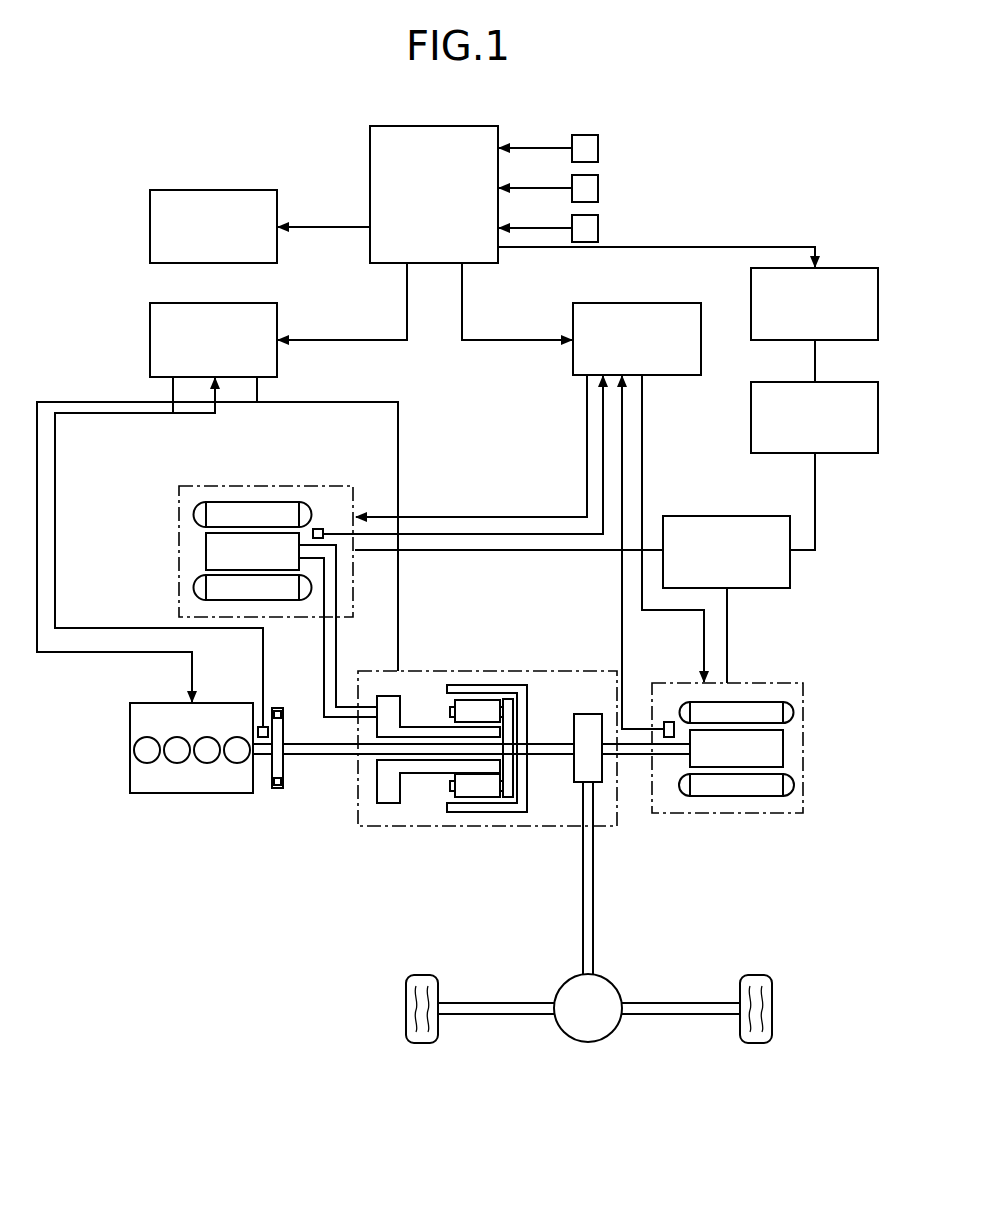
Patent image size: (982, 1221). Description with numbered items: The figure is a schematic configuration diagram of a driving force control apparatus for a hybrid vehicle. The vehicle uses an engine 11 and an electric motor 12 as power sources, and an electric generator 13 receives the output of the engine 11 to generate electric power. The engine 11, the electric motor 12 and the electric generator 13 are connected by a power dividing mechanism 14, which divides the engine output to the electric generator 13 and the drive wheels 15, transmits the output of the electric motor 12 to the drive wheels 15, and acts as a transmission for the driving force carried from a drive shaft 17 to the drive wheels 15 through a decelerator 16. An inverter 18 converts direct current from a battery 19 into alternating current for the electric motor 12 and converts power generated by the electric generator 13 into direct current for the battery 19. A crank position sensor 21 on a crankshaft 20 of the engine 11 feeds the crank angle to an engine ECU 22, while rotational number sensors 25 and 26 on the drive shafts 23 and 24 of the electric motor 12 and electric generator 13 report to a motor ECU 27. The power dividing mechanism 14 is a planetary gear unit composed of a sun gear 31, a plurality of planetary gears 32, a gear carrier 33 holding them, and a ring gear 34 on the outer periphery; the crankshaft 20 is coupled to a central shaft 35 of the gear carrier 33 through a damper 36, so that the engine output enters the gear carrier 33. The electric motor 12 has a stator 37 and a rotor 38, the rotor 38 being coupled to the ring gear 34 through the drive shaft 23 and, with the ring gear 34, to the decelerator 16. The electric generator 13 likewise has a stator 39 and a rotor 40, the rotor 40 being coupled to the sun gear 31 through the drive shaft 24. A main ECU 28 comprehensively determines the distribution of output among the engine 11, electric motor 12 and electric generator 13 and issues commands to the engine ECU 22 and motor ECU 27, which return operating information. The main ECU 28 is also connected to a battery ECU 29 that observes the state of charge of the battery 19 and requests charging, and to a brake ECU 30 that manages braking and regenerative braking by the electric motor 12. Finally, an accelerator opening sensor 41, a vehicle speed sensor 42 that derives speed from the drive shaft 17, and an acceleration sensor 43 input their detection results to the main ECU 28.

The engine 11 is at (160, 703).
The electric motor 12 is at (752, 726).
The electric generator 13 is at (241, 555).
The power dividing mechanism 14 is at (487, 746).
The drive wheels 15 is at (424, 975).
The decelerator 16 is at (610, 985).
The drive shaft 17 is at (505, 1003).
The inverter 18 is at (731, 516).
The battery 19 is at (841, 382).
The crankshaft 20 is at (262, 757).
The crank position sensor 21 is at (258, 730).
The engine ECU 22 is at (231, 303).
The drive shaft 23 is at (637, 756).
The drive shaft 24 is at (332, 550).
The rotational number sensor 25 is at (669, 722).
The rotational number sensor 26 is at (318, 529).
The motor ECU 27 is at (651, 303).
The main ECU 28 is at (457, 126).
The battery ECU 29 is at (841, 268).
The brake ECU 30 is at (231, 190).
The sun gear 31 is at (496, 765).
The planetary gears 32 is at (456, 707).
The gear carrier 33 is at (510, 790).
The ring gear 34 is at (475, 812).
The central shaft 35 is at (330, 755).
The damper 36 is at (278, 790).
The stator 37 is at (766, 704).
The rotor 38 is at (776, 748).
The stator 39 is at (285, 600).
The rotor 40 is at (212, 553).
The accelerator opening sensor 41 is at (598, 147).
The vehicle speed sensor 42 is at (598, 187).
The acceleration sensor 43 is at (598, 227).